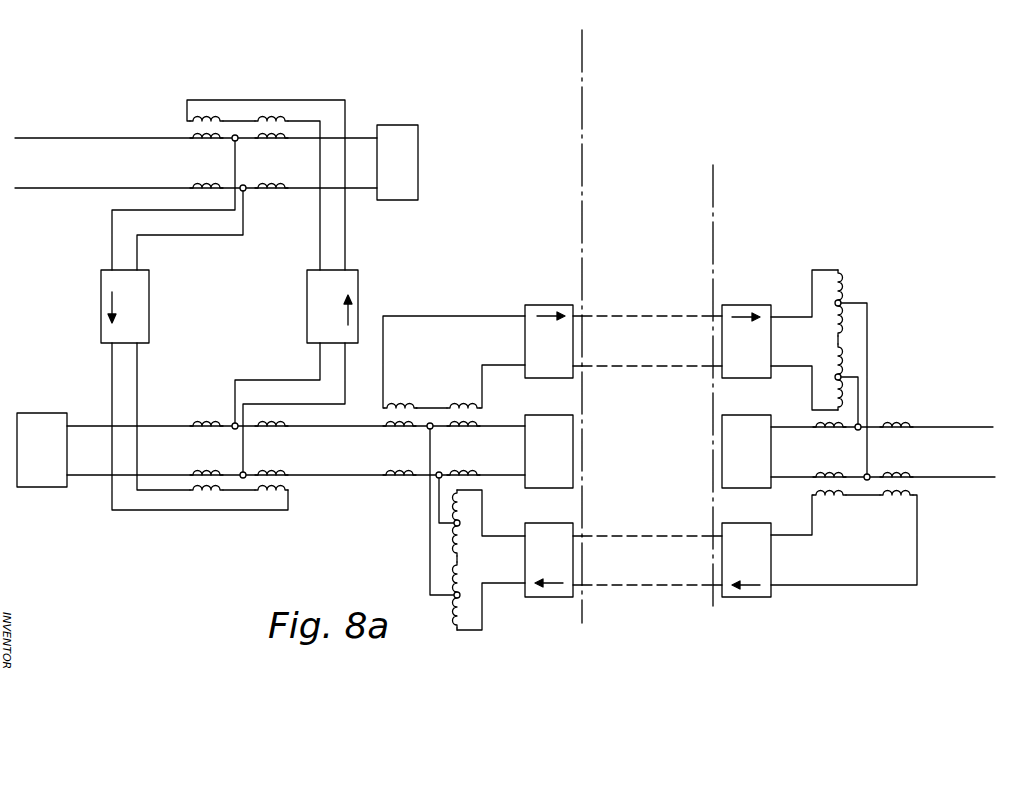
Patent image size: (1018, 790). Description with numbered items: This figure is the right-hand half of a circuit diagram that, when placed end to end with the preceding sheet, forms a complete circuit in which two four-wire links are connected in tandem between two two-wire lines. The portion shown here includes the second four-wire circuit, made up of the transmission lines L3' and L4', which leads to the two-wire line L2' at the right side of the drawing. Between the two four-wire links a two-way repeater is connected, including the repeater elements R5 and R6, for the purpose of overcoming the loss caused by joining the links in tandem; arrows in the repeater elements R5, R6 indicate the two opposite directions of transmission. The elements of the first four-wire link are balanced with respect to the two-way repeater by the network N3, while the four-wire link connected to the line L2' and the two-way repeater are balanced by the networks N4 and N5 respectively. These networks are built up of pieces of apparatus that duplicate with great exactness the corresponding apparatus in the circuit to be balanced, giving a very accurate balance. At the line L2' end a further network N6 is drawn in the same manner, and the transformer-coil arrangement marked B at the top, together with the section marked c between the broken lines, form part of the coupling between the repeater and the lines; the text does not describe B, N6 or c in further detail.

The bridge transformer network B is at (228, 168).
The network N3 is at (397, 162).
The network N4 is at (42, 450).
The network N5 is at (549, 451).
The network N6 is at (746, 451).
The repeater element R5 is at (296, 371).
The repeater element R6 is at (194, 390).
The transmission line L3' is at (647, 341).
The transmission line L4' is at (647, 560).
The two-wire line L2' is at (883, 503).
The intermediate section c is at (721, 326).